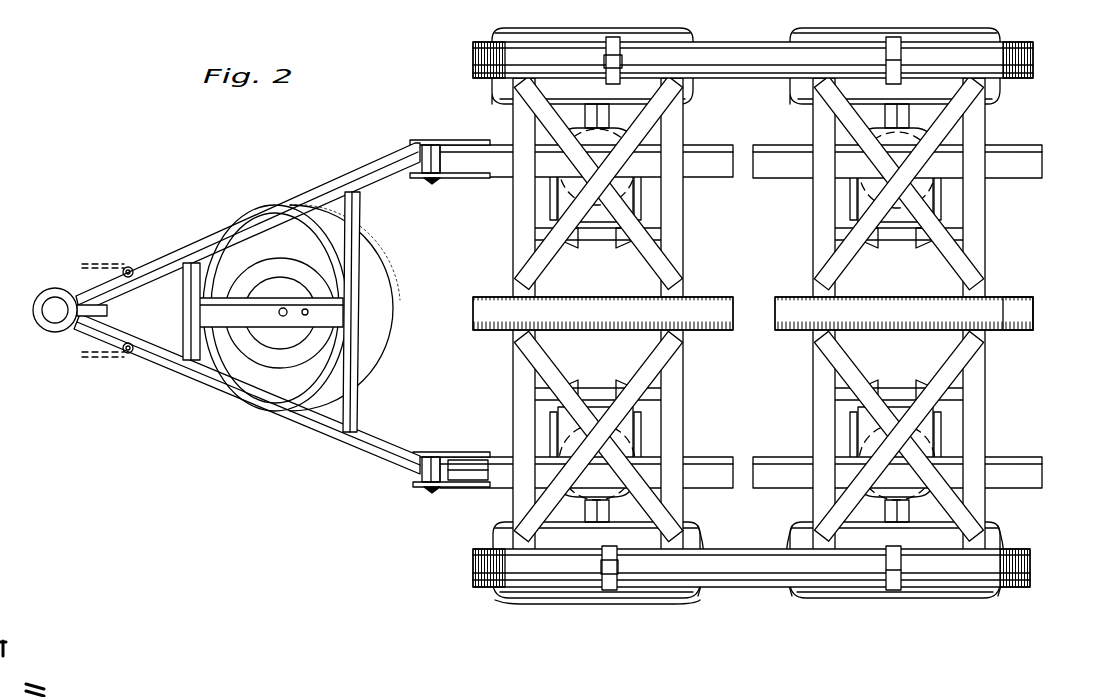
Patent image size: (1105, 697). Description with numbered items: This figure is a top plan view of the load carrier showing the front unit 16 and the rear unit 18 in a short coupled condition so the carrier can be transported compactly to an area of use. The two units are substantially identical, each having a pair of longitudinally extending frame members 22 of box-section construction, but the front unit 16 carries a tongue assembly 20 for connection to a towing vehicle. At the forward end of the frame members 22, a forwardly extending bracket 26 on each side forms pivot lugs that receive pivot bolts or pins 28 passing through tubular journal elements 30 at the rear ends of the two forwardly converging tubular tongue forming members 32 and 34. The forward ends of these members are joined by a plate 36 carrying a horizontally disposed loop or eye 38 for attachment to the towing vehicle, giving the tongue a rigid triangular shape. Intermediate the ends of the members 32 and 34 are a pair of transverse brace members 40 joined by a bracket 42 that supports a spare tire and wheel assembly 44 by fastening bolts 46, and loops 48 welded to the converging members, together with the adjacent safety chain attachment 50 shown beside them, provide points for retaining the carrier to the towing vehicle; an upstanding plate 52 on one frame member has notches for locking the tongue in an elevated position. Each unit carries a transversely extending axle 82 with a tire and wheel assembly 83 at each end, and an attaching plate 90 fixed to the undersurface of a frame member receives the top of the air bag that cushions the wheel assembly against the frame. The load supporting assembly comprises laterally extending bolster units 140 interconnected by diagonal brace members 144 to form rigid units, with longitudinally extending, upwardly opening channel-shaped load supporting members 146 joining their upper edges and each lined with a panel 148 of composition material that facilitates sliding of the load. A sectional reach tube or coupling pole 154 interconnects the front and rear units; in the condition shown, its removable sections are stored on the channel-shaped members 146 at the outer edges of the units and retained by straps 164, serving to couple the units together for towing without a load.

The front unit 16 is at (554, 602).
The rear unit 18 is at (838, 606).
The tongue assembly 20 is at (247, 309).
The longitudinally extending frame members 22 is at (702, 462).
The forwardly extending bracket 26 is at (447, 490).
The pivot bolts or pins 28 is at (425, 140).
The tubular journal elements 30 is at (433, 148).
The tongue forming member 32 is at (316, 193).
The tongue forming member 34 is at (364, 450).
The plate 36 is at (78, 318).
The loop or eye 38 is at (44, 324).
The transversely extending brace members 40 is at (190, 300).
The bracket 42 is at (200, 316).
The spare tire and wheel assembly 44 is at (380, 273).
The fastening bolts 46 is at (283, 308).
The loops 48 is at (132, 268).
The safety chain 50 is at (88, 263).
The upstanding plate 52 is at (470, 450).
The axle 82 is at (596, 560).
The tire and wheel assembly 83 is at (672, 596).
The attaching bracket or plate 90 is at (592, 410).
The transverse frame members or bolster units 140 is at (672, 414).
The diagonal brace members 144 is at (655, 259).
The channel-shaped load supporting members 146 is at (1033, 55).
The panel 148 is at (1030, 320).
The reach tube or coupling pole 154 is at (950, 582).
The straps 164 is at (612, 582).